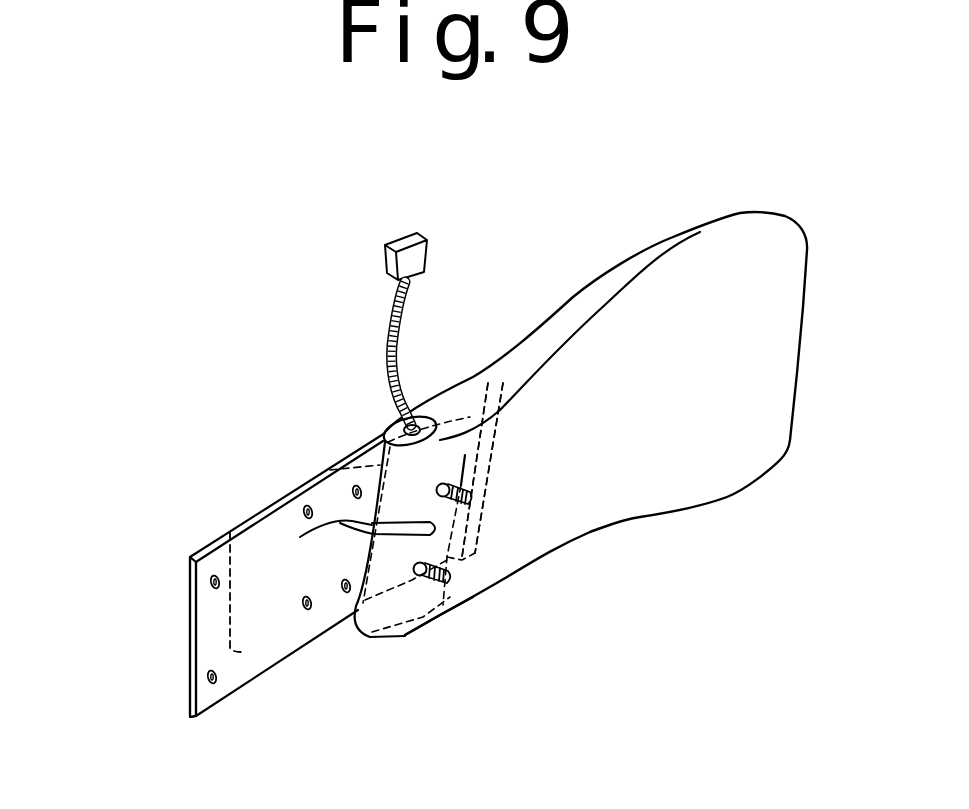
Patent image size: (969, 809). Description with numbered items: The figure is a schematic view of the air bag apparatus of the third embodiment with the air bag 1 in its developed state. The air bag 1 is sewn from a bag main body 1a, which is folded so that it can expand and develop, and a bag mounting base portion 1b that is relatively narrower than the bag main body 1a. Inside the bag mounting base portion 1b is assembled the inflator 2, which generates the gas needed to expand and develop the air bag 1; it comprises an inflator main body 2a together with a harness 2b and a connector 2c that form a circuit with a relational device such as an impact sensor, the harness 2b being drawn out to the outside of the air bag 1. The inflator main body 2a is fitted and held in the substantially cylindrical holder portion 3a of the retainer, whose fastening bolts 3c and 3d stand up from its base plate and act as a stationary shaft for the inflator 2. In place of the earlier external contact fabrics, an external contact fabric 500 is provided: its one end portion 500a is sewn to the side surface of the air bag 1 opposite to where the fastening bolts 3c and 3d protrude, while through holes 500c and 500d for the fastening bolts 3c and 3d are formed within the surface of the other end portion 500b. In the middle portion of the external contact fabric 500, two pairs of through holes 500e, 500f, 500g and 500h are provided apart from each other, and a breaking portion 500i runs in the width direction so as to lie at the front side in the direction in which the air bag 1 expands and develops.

The air bag 1 is at (638, 244).
The bag main body 1a is at (777, 322).
The bag mounting base portion 1b is at (403, 636).
The inflator 2 is at (287, 236).
The inflator main body 2a is at (438, 418).
The harness 2b is at (389, 335).
The connector 2c is at (420, 257).
The holder portion 3a is at (378, 530).
The fastening bolt 3c is at (462, 465).
The fastening bolt 3d is at (450, 583).
The external contact fabric 500 is at (210, 533).
The one end portion 500a is at (490, 488).
The other end portion 500b is at (188, 653).
The through hole 500c is at (222, 582).
The through hole 500d is at (214, 681).
The through hole 500e is at (357, 498).
The through hole 500f is at (350, 587).
The through hole 500g is at (307, 502).
The through hole 500h is at (310, 606).
The breaking portion 500i is at (235, 648).